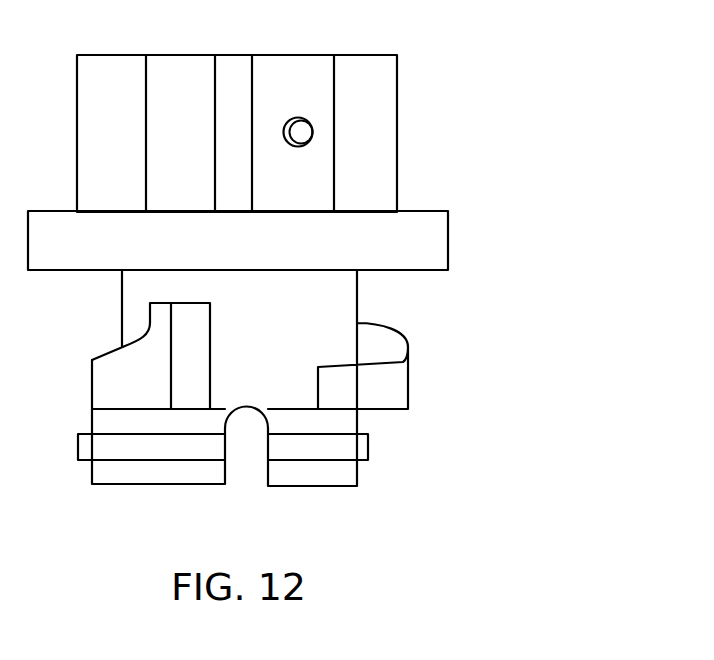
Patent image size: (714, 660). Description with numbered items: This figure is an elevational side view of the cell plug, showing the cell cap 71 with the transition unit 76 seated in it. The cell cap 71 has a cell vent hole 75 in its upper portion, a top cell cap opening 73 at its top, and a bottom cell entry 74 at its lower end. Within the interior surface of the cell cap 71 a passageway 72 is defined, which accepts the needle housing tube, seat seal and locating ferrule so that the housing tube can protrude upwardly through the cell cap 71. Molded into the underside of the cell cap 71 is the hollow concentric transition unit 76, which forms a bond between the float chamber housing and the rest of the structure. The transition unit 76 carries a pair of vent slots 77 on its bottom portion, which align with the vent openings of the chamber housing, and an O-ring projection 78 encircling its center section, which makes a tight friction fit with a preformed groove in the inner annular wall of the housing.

The cell cap 71 is at (560, 185).
The passageway 72 is at (278, 337).
The top cell cap opening 73 is at (265, 54).
The bottom cell entry 74 is at (120, 487).
The cell vent hole 75 is at (315, 123).
The transition unit 76 is at (357, 422).
The vent slots 77 is at (245, 460).
The O-ring projection 78 is at (370, 450).